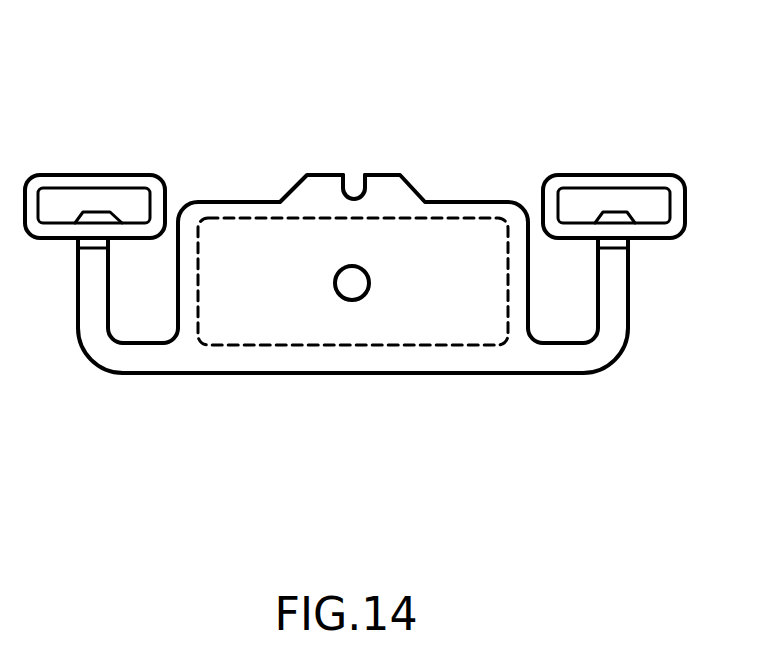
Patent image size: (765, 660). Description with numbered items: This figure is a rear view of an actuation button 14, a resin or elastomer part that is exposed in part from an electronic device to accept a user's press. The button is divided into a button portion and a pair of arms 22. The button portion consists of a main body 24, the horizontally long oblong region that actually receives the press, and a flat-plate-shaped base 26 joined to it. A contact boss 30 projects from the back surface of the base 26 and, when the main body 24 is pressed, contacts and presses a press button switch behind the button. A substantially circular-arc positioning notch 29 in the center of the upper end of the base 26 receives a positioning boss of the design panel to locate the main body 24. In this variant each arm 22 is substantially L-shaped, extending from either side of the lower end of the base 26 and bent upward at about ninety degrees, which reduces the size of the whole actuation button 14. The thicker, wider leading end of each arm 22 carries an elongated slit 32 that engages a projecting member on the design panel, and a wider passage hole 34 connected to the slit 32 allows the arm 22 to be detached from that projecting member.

The actuation button 14 is at (344, 134).
The arms 22 is at (100, 353).
The main body 24 is at (437, 347).
The base 26 is at (220, 365).
The positioning notch 29 is at (352, 186).
The contact boss 30 is at (350, 292).
The slit 32 is at (90, 197).
The passage hole 34 is at (52, 197).